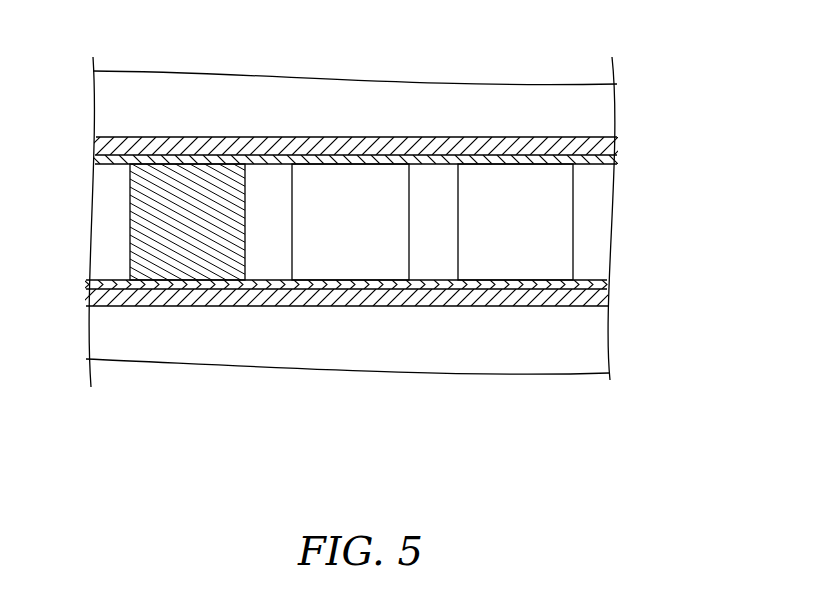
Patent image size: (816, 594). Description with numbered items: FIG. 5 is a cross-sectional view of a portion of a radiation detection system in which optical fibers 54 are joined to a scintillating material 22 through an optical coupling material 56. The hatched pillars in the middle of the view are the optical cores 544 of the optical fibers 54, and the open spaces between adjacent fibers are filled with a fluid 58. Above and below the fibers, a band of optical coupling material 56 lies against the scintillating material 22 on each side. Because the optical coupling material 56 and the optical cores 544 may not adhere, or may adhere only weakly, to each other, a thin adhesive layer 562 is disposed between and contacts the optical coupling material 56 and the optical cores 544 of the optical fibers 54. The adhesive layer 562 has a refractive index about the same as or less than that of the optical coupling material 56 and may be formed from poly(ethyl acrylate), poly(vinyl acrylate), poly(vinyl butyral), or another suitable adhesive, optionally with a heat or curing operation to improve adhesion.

The scintillating material 22 is at (367, 113).
The optical fibers 54 is at (294, 181).
The optical coupling material 56 is at (538, 150).
The adhesive layer 562 is at (190, 158).
The fluid 58 is at (122, 229).
The optical cores 544 is at (156, 242).